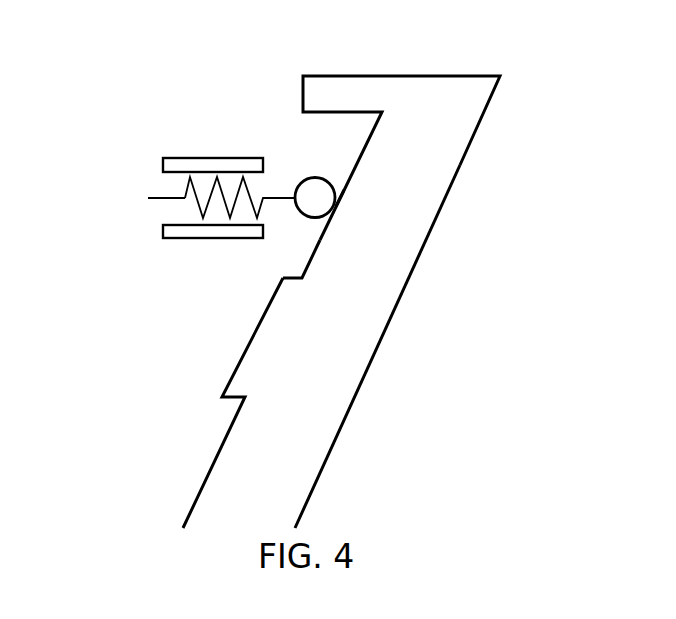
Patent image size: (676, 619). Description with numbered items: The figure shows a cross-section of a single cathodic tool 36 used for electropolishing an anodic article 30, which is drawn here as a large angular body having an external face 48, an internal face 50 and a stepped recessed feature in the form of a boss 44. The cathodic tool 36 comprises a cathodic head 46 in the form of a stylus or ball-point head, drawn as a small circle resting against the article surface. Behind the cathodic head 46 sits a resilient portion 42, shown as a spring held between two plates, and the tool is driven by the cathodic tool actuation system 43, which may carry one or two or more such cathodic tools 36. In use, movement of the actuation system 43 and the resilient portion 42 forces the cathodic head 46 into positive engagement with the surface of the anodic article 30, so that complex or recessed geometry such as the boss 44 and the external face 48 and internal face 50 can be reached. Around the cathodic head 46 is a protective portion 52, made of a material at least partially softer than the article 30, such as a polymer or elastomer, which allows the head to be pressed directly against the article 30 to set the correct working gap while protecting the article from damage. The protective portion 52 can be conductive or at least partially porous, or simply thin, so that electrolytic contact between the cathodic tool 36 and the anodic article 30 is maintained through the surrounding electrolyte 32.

The anodic article 30 is at (433, 102).
The electrolyte 32 is at (553, 189).
The cathodic tool 36 is at (178, 150).
The resilient portion 42 is at (197, 202).
The cathodic tool actuation system 43 is at (133, 198).
The boss 44 is at (267, 343).
The cathodic head 46 is at (315, 198).
The external face 48 is at (310, 258).
The internal face 50 is at (422, 257).
The protective portion 52 is at (338, 188).